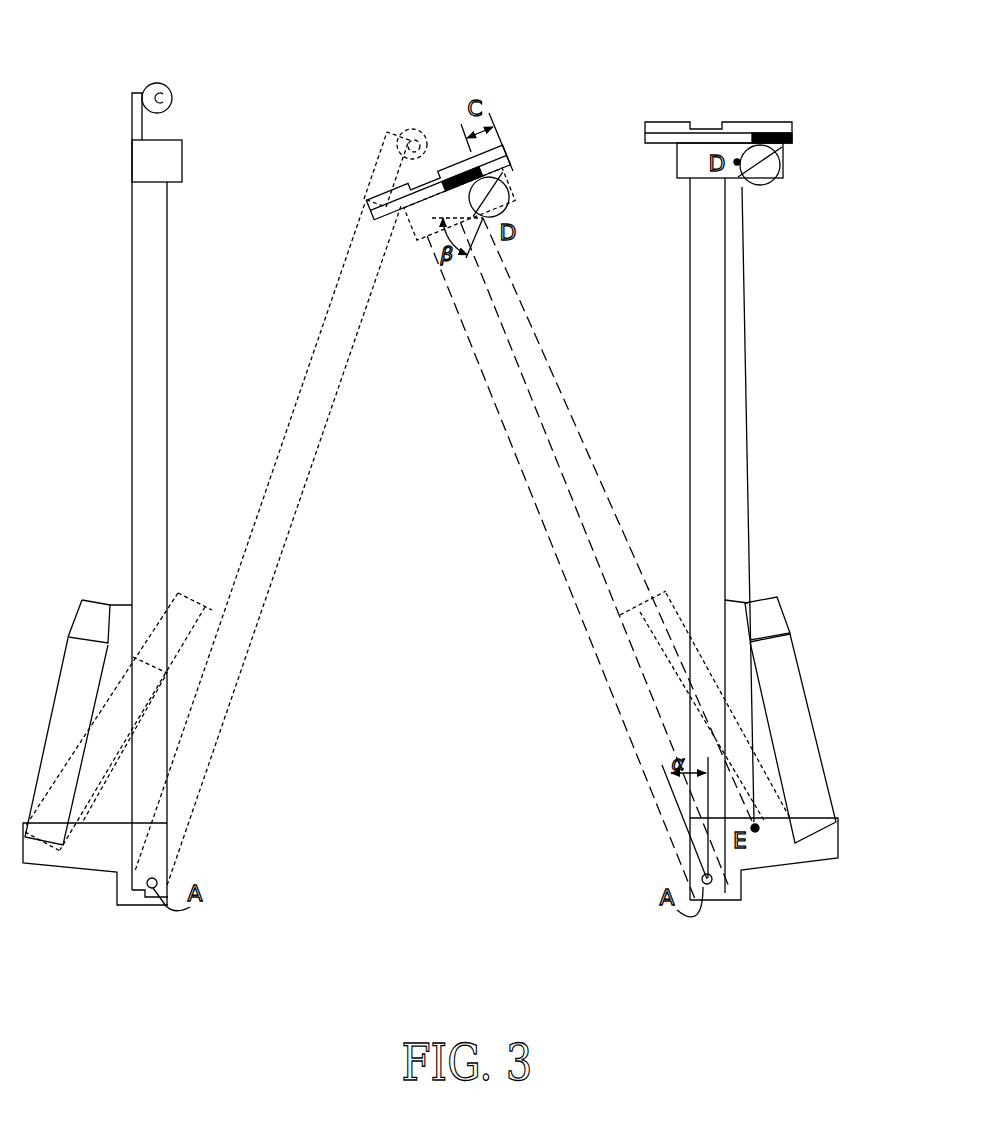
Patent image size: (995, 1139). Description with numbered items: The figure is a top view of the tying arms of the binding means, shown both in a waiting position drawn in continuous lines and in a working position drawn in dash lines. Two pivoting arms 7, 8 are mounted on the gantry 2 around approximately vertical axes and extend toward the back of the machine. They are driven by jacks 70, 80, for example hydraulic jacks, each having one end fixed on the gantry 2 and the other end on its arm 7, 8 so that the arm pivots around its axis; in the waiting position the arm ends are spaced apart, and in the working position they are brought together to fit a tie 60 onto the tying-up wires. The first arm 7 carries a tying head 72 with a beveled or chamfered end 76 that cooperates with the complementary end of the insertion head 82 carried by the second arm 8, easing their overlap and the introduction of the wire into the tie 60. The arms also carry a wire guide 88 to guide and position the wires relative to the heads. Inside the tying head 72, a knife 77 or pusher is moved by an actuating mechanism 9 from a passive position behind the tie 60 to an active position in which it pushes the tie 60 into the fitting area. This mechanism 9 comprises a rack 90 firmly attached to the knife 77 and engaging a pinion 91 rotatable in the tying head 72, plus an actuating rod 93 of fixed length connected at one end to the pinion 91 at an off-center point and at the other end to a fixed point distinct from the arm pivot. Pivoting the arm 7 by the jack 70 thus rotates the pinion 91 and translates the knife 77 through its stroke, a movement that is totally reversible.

The gantry 2 is at (113, 862).
The pivoting arm 7 is at (703, 448).
The pivoting arm 8 is at (158, 360).
The actuating mechanism 9 is at (768, 288).
The tie 60 is at (383, 203).
The jack 70 is at (785, 637).
The tying head 72 is at (688, 162).
The beveled end 76 is at (380, 198).
The knife 77 is at (743, 128).
The jack 80 is at (70, 653).
The insertion head 82 is at (163, 170).
The wire guide 88 is at (171, 91).
The rack 90 is at (792, 143).
The pinion 91 is at (780, 173).
The actuating rod 93 is at (745, 442).